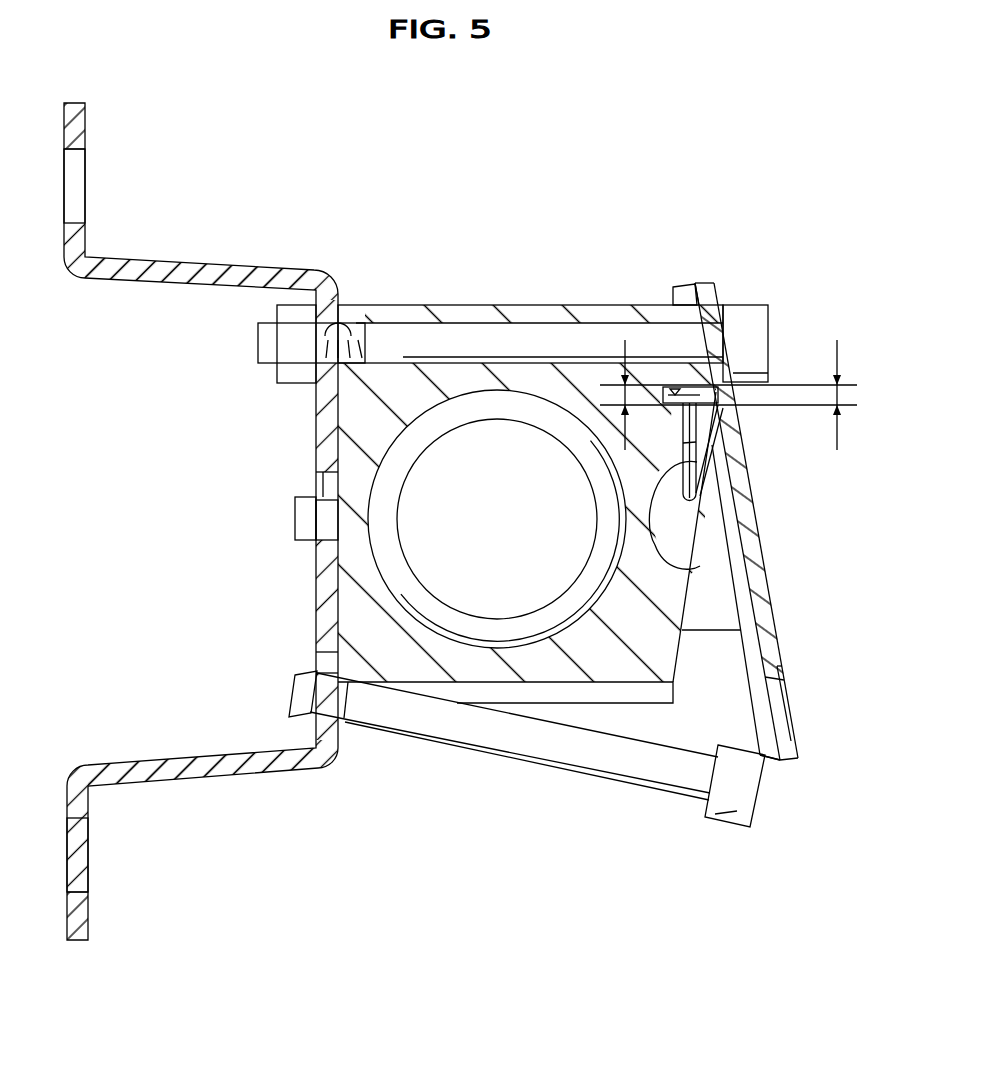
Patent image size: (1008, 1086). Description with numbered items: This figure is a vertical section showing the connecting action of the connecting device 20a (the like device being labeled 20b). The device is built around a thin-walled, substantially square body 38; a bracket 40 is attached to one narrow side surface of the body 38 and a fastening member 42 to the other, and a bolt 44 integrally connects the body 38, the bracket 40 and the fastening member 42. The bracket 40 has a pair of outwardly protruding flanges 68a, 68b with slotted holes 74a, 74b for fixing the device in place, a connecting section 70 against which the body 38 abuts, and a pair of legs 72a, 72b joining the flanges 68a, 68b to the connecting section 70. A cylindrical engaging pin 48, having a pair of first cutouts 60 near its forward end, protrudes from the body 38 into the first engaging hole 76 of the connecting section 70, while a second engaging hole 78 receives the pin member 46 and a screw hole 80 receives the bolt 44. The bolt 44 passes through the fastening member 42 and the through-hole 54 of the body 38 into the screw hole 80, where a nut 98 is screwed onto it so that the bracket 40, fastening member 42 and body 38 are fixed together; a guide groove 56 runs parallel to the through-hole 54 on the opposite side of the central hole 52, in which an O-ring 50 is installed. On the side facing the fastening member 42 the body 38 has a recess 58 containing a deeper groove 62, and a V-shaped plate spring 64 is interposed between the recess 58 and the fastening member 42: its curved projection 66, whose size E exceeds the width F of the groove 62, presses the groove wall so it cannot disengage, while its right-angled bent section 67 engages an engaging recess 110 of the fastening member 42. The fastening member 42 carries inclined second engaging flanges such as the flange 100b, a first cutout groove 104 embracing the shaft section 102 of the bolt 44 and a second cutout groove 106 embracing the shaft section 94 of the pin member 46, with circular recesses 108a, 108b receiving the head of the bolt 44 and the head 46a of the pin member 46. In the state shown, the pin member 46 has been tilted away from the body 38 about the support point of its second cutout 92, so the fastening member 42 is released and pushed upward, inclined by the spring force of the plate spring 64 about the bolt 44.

The connecting device 20a is at (468, 522).
The holder assembly 20b is at (545, 144).
The body 38 is at (413, 305).
The bracket 40 is at (233, 775).
The fastening member 42 is at (769, 572).
The bolt 44 is at (756, 305).
The pin member 46 is at (764, 794).
The head of the pin member 46a is at (728, 802).
The engaging pin 48 is at (295, 524).
The O-ring 50 is at (473, 633).
The hole 52 is at (493, 437).
The through-hole 54 is at (530, 333).
The guide groove 56 is at (665, 698).
The recess 58 is at (770, 593).
The first cutouts 60 is at (323, 528).
The groove 62 is at (689, 385).
The plate spring 64 is at (735, 502).
The projection 66 is at (668, 386).
The bent section 67 is at (733, 374).
The flange 68a is at (80, 122).
The flange 68b is at (82, 917).
The connecting section 70 is at (317, 594).
The leg 72a is at (118, 273).
The leg 72b is at (172, 757).
The slotted hole 74a is at (78, 177).
The slotted hole 74b is at (80, 860).
The first engaging hole 76 is at (322, 486).
The second engaging hole 78 is at (322, 661).
The screw hole 80 is at (352, 312).
The second cutout 92 is at (328, 716).
The shaft section of the pin member 94 is at (577, 745).
The nut 98 is at (290, 368).
The second engaging flange 100b is at (712, 612).
The shaft section of the bolt 102 is at (567, 333).
The first cutout groove 104 is at (686, 287).
The second cutout groove 106 is at (790, 747).
The circular recess 108a is at (713, 305).
The circular recess 108b is at (784, 705).
The engaging recess 110 is at (740, 442).
The size of the projection E is at (826, 395).
The size in the widthwise direction of the groove F is at (728, 395).